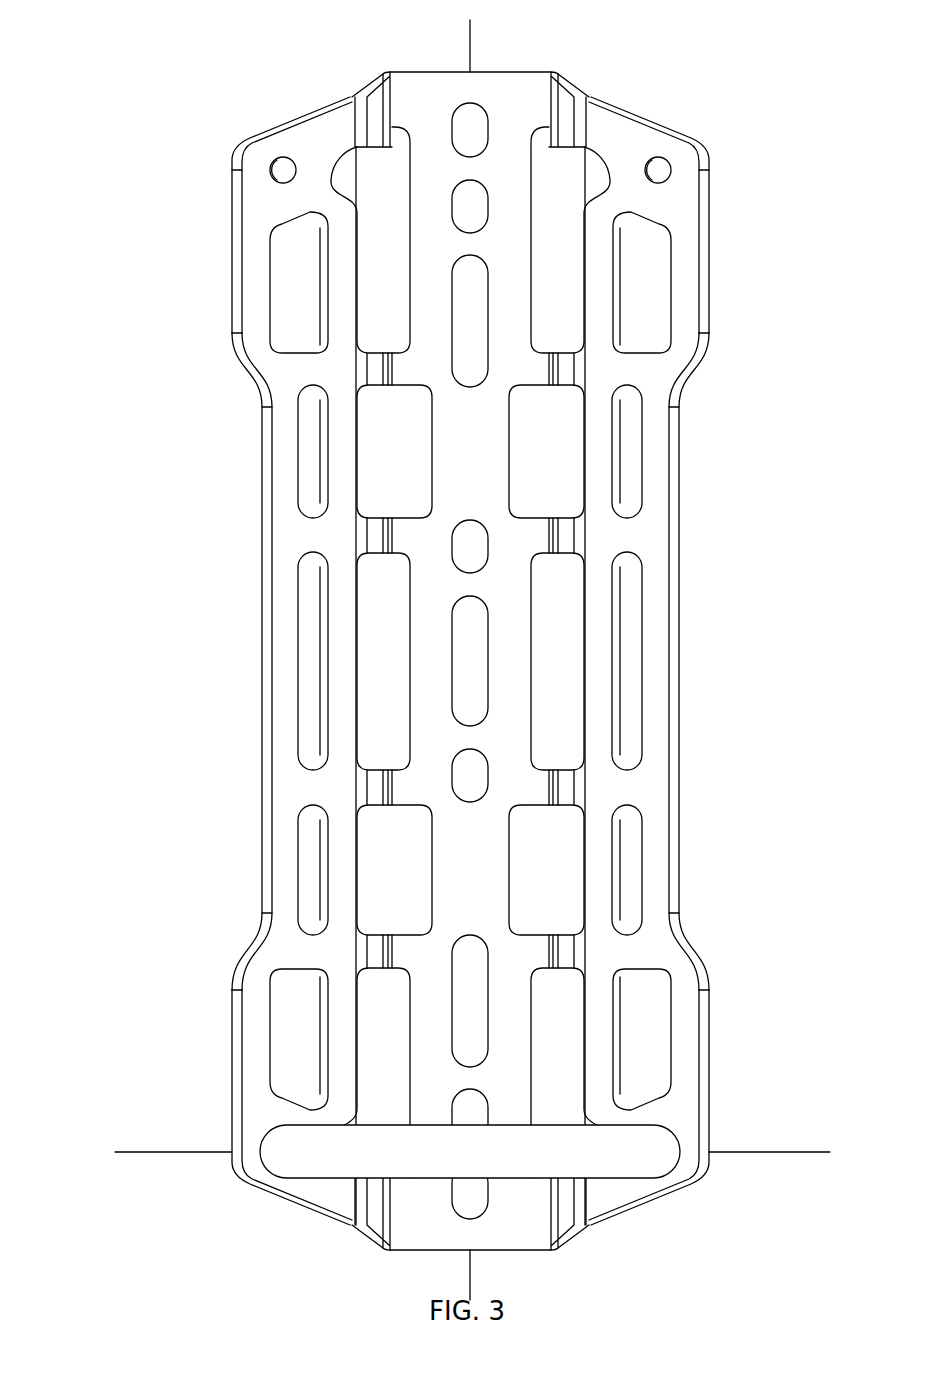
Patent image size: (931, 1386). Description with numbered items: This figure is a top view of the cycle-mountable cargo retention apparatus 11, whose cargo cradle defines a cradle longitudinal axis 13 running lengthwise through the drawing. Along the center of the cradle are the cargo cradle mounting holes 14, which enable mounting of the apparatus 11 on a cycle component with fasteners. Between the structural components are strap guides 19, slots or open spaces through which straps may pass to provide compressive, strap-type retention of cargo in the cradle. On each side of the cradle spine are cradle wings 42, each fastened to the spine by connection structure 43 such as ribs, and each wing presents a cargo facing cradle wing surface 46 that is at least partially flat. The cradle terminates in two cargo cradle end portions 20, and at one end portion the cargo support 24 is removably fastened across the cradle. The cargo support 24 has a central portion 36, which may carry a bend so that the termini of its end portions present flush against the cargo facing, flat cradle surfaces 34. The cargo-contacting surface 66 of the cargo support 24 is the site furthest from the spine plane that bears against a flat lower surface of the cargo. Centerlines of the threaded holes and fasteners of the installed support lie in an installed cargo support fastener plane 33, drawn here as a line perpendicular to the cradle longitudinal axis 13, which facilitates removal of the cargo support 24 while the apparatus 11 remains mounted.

The cycle-mountable cargo retention apparatus 11 is at (128, 459).
The cradle longitudinal axis 13 is at (470, 48).
The cargo cradle mounting holes 14 is at (490, 320).
The strap guides 19 is at (585, 840).
The cargo cradle end portions 20 is at (290, 118).
The cargo support 24 is at (280, 1125).
The installed cargo support fastener plane 33 is at (152, 1157).
The cargo facing, flat cradle surfaces 34 is at (283, 588).
The central portion 36 is at (468, 1155).
The cradle wings 42 is at (680, 478).
The connection structure 43 is at (352, 88).
The cargo facing cradle wing surface 46 is at (252, 262).
The cargo-contacting surface 66 is at (467, 1125).